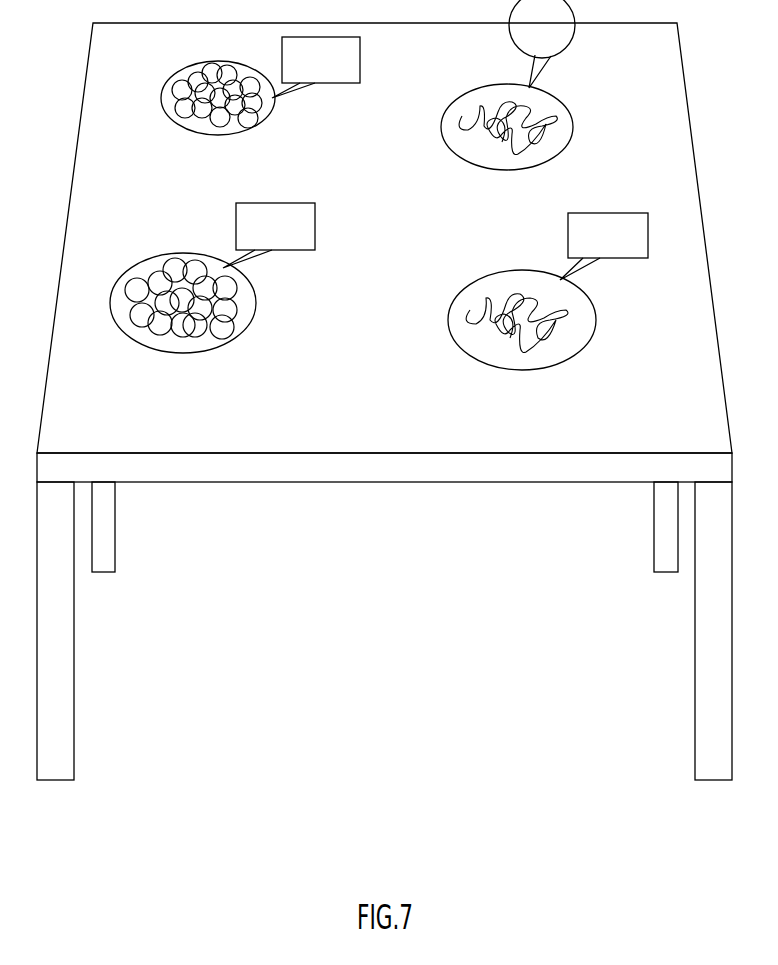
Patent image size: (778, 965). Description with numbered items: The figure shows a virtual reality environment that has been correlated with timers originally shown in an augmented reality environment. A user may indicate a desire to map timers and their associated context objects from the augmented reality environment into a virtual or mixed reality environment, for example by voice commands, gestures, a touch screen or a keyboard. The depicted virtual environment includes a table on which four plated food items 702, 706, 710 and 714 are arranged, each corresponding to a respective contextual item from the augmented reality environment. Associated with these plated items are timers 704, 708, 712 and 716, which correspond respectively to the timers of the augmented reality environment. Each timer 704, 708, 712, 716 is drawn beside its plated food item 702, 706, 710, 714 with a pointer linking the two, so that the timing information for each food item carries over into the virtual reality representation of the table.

The plated food item 702 is at (241, 336).
The timer 704 is at (315, 220).
The plated food item 706 is at (596, 320).
The timer 708 is at (567, 240).
The plated food item 710 is at (255, 133).
The timer 712 is at (360, 57).
The plated food item 714 is at (560, 153).
The timer 716 is at (574, 38).